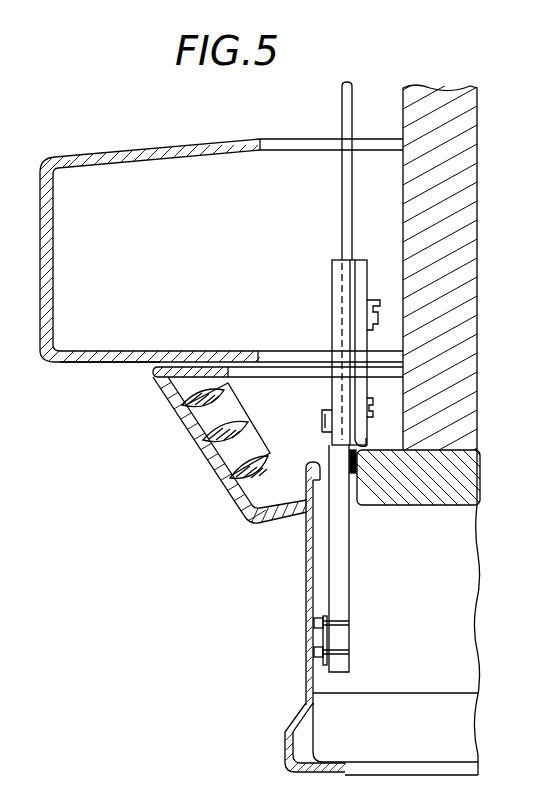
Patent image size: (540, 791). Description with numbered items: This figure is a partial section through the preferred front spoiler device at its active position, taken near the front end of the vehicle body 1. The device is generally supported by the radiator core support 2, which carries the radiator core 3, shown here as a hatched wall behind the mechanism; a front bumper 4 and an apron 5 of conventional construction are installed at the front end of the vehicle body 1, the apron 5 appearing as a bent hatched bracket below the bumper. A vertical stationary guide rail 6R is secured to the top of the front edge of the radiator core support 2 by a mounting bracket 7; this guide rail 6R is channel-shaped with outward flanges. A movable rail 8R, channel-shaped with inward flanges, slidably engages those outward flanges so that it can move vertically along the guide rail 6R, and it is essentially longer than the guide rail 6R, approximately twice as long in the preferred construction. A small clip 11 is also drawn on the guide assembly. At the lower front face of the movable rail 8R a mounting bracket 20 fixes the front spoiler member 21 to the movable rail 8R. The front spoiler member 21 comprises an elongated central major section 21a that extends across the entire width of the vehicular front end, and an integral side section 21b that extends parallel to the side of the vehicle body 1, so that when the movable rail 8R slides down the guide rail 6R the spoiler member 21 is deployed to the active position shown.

The vehicle body 1 is at (308, 199).
The radiator core support 2 is at (470, 475).
The radiator core 3 is at (462, 344).
The front bumper 4 is at (113, 366).
The apron 5 is at (235, 488).
The stationary guide rail 6R is at (361, 262).
The mounting bracket 7 is at (364, 450).
The movable rail 8R is at (342, 565).
The clip 11 is at (380, 303).
The mounting bracket 20 is at (328, 642).
The front spoiler member 21 is at (305, 683).
The central major section 21a is at (305, 591).
The side section 21b is at (468, 649).